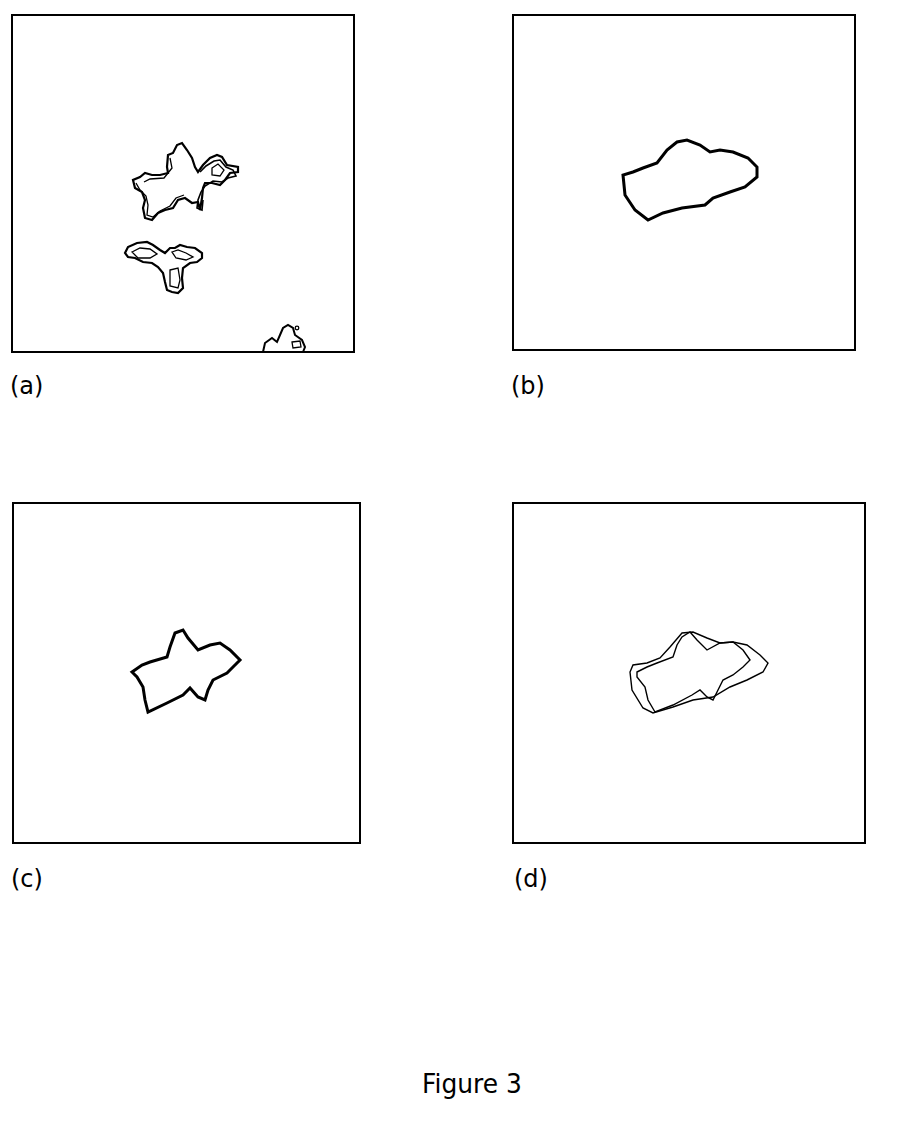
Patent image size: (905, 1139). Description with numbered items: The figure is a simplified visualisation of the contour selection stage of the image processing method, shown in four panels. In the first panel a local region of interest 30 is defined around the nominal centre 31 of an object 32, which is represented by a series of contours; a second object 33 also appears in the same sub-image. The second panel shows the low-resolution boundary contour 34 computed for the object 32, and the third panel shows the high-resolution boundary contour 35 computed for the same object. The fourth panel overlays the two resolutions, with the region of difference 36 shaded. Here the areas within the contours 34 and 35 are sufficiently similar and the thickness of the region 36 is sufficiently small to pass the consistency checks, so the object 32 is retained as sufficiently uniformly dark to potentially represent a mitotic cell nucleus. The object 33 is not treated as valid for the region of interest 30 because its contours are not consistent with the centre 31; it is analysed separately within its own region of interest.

The local region of interest 30 is at (350, 118).
The nominal centre 31 is at (168, 191).
The object 32 is at (194, 153).
The second object 33 is at (183, 272).
The low-resolution boundary contour 34 is at (745, 157).
The high-resolution boundary contour 35 is at (230, 647).
The region of difference 36 is at (757, 657).